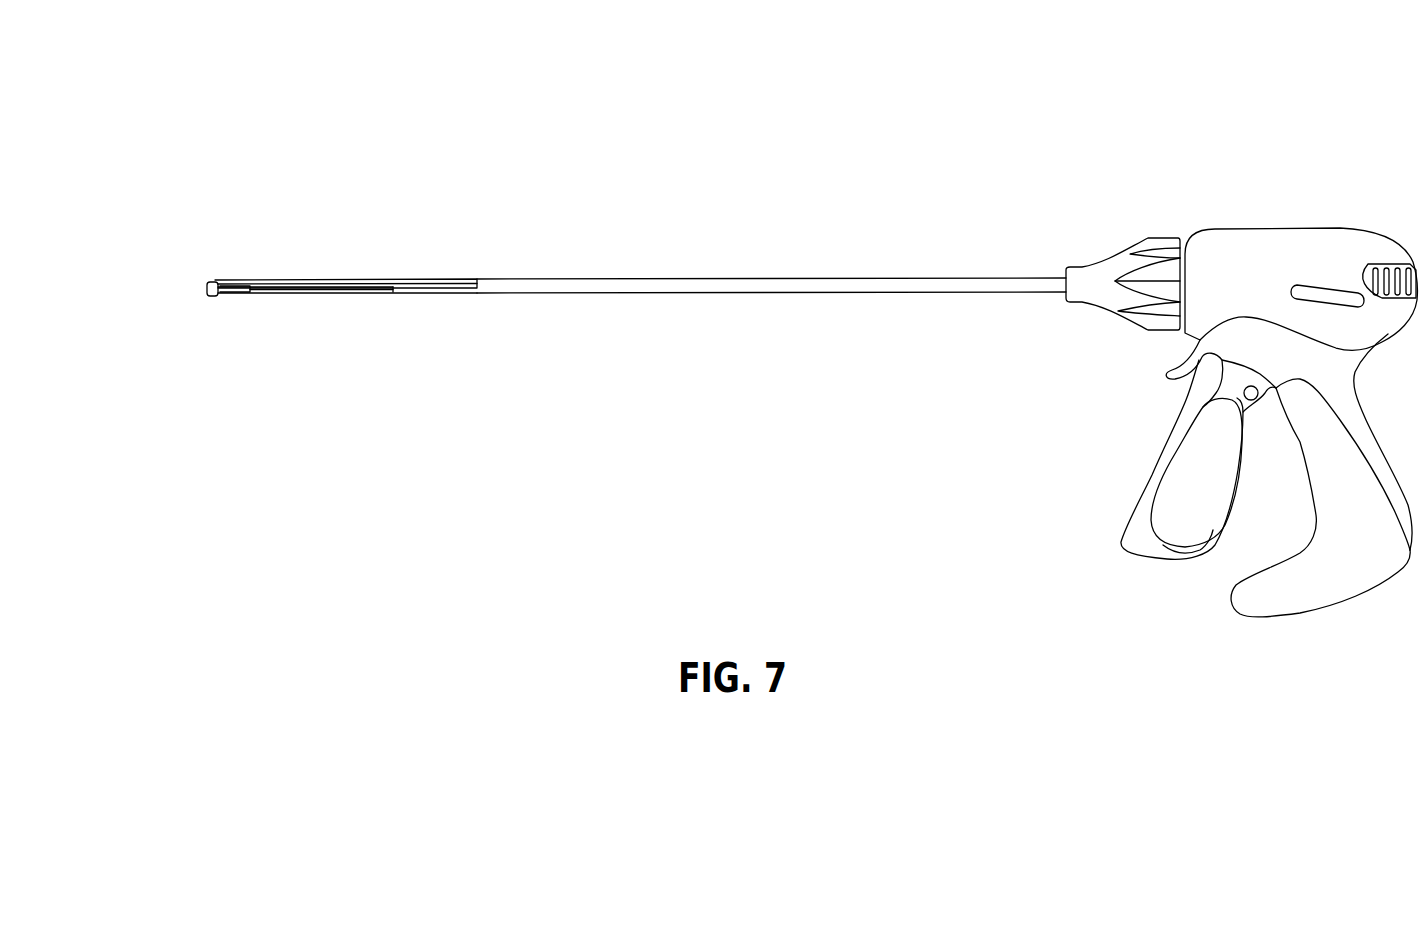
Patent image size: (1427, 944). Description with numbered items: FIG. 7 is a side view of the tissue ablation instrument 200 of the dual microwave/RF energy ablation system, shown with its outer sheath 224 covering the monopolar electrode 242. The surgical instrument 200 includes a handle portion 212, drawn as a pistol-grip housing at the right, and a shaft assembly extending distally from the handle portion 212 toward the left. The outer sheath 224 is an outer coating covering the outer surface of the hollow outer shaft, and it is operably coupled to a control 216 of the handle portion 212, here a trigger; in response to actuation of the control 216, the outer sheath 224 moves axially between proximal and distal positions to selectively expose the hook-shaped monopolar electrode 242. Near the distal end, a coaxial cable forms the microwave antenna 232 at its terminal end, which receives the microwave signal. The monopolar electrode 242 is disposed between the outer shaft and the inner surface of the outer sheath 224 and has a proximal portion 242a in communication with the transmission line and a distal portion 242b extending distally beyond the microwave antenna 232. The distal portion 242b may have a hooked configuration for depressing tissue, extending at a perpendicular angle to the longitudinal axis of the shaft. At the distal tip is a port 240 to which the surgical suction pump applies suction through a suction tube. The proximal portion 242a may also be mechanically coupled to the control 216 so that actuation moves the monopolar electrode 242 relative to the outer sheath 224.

The tissue ablation instrument 200 is at (932, 102).
The handle portion 212 is at (1243, 245).
The control 216 is at (1157, 471).
The outer sheath 224 is at (710, 276).
The microwave antenna 232 is at (384, 291).
The port 240 is at (206, 289).
The monopolar electrode 242 is at (440, 279).
The proximal portion 242a is at (469, 294).
The distal portion 242b is at (224, 281).